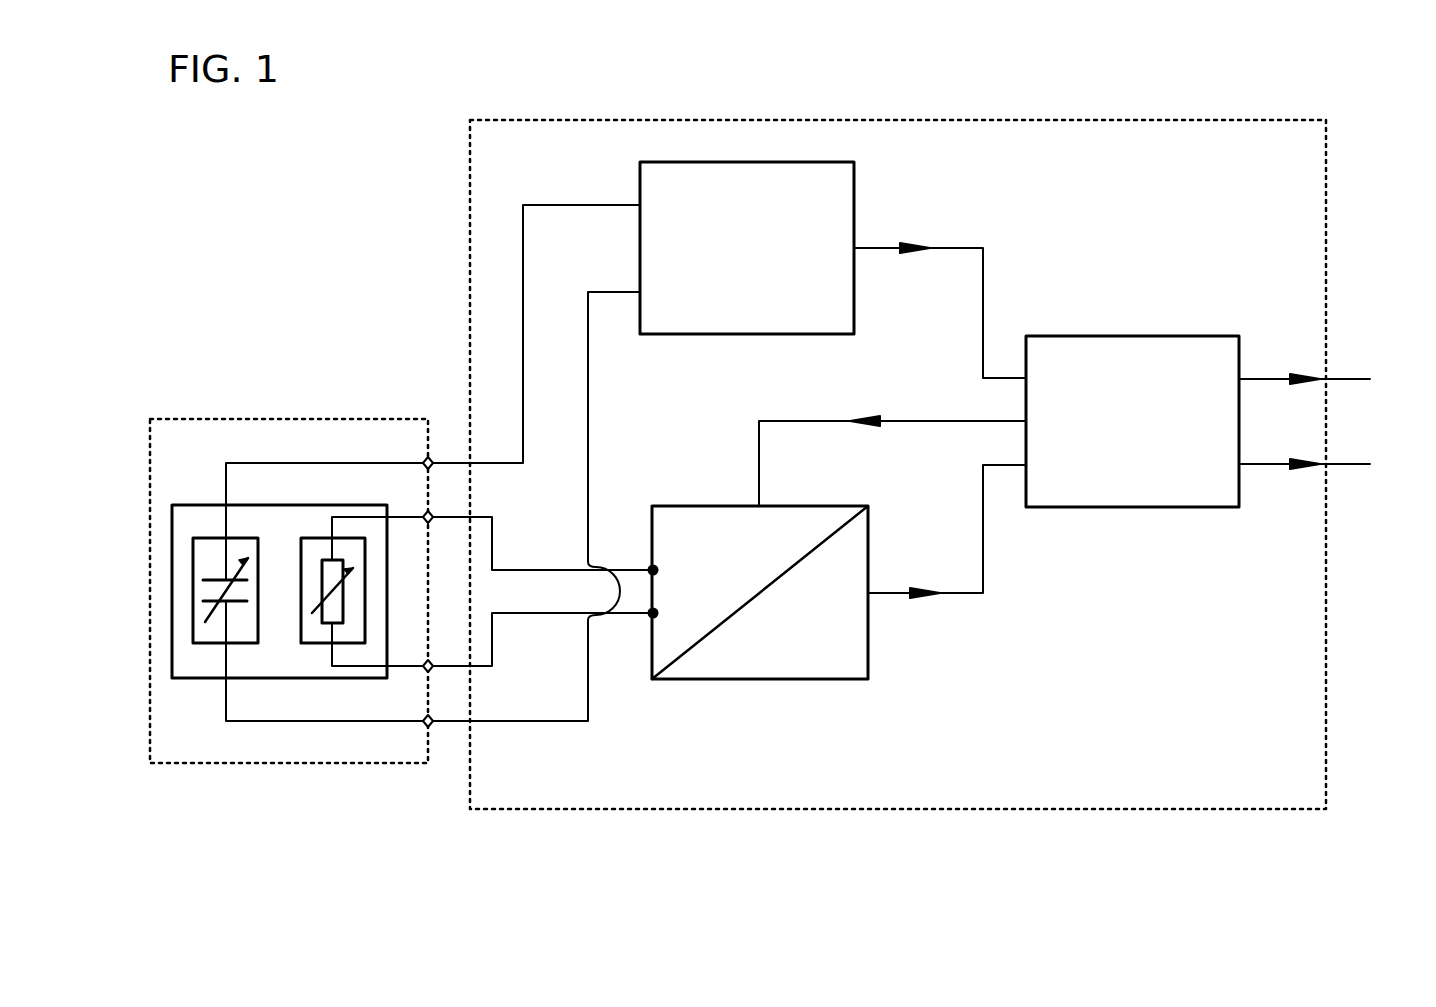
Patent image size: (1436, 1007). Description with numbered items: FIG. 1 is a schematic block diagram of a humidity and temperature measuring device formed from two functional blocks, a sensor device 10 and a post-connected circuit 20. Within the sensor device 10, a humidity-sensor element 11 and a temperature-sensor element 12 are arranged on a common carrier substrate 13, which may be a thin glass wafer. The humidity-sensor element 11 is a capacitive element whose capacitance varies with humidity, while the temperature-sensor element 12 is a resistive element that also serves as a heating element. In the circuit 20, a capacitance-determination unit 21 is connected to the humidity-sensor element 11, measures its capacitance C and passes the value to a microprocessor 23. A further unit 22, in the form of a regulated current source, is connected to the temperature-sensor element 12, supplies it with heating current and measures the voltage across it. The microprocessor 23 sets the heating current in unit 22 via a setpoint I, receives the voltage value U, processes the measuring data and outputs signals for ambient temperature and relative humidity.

The sensor device 10 is at (218, 763).
The humidity-sensor element 11 is at (205, 635).
The temperature-sensor element 12 is at (315, 549).
The carrier substrate 13 is at (197, 518).
The circuit 20 is at (783, 809).
The capacitance-determination unit 21 is at (837, 193).
The unit 22 is at (831, 662).
The microprocessor 23 is at (1155, 484).